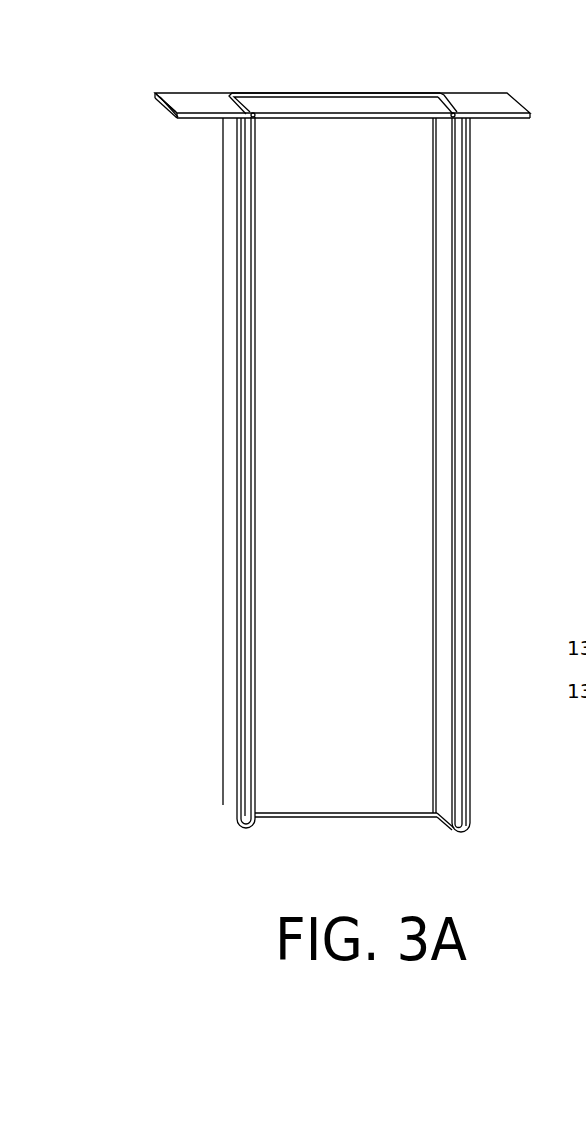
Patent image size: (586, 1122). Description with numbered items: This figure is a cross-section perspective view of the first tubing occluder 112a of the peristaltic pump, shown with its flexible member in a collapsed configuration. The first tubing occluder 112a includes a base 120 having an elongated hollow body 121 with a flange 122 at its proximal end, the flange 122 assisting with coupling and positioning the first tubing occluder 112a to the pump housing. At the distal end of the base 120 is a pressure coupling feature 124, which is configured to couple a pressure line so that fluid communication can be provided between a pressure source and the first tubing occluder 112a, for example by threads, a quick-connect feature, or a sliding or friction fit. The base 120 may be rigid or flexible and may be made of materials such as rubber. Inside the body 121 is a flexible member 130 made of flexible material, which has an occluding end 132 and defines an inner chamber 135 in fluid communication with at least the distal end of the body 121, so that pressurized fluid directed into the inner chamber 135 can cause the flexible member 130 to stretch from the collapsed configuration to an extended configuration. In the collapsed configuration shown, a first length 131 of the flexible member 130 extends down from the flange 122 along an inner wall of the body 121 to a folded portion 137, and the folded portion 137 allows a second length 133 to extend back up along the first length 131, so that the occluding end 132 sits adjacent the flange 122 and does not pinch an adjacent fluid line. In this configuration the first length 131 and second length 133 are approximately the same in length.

The first tubing occluder 112a is at (146, 92).
The base 120 is at (316, 473).
The elongated hollow body 121 is at (232, 305).
The flange 122 is at (490, 102).
The pressure coupling feature 124 is at (216, 806).
The flexible member 130 is at (393, 473).
The first length 131 is at (458, 523).
The occluding end 132 is at (318, 102).
The second length 133 is at (440, 612).
The inner chamber 135 is at (372, 468).
The folded portion 137 is at (464, 836).